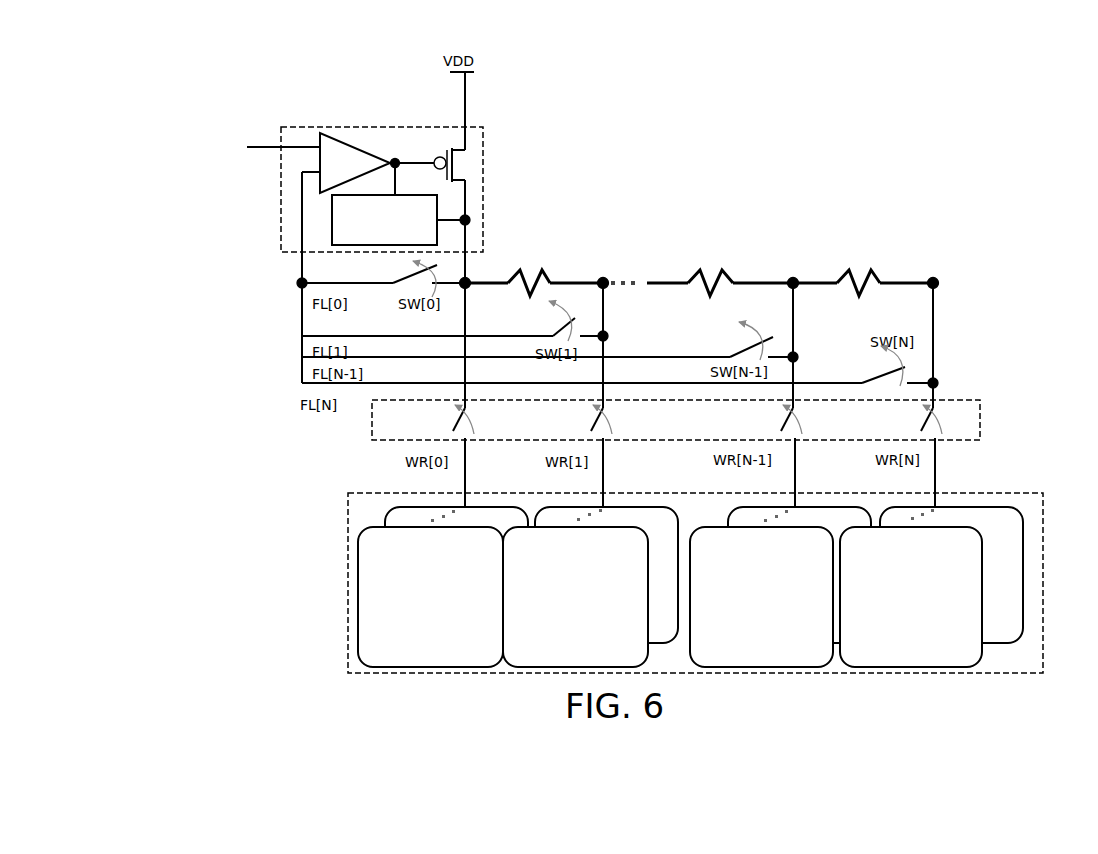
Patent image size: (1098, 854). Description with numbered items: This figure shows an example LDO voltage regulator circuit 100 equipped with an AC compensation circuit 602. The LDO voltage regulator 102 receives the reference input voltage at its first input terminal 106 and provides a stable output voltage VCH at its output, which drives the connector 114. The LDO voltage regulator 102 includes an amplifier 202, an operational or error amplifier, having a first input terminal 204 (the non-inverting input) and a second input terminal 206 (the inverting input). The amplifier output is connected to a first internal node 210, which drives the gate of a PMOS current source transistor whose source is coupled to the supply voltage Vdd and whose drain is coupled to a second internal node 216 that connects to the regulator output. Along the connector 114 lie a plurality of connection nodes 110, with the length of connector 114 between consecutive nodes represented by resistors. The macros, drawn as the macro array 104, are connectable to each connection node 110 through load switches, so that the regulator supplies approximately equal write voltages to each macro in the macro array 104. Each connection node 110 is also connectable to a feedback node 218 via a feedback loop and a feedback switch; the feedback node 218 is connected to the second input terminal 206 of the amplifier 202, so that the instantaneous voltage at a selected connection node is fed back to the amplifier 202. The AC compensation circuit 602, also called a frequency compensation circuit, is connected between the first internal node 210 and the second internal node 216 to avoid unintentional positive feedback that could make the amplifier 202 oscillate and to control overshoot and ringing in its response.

The LDO voltage regulator circuit 100 is at (898, 124).
The LDO voltage regulator 102 is at (486, 124).
The memory macro array 104 is at (1046, 506).
The first input terminal 106 is at (215, 139).
The connection node 110 is at (727, 268).
The connector 114 is at (575, 280).
The amplifier 202 is at (384, 152).
The first input terminal 204 is at (283, 140).
The second input terminal 206 is at (302, 220).
The first internal node 210 is at (396, 157).
The second internal node 216 is at (470, 218).
The feedback node 218 is at (296, 286).
The AC compensation circuit 602 is at (330, 240).